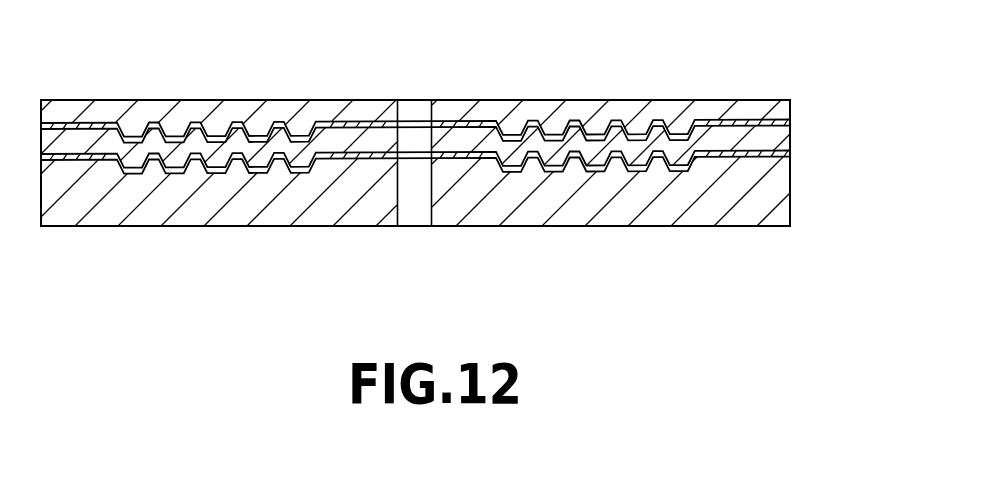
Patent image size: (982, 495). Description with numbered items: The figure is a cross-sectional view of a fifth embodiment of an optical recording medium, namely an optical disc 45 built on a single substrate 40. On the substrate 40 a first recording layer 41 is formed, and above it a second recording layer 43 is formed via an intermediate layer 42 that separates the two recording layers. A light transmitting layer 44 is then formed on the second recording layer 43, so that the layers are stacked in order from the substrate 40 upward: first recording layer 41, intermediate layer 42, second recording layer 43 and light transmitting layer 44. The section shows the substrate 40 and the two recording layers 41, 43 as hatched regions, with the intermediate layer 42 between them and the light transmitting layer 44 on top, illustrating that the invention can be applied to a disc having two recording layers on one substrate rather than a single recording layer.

The substrate 40 is at (777, 212).
The first recording layer 41 is at (700, 163).
The intermediate layer 42 is at (777, 138).
The second recording layer 43 is at (785, 117).
The light transmitting layer 44 is at (546, 106).
The optical disc 45 is at (690, 78).